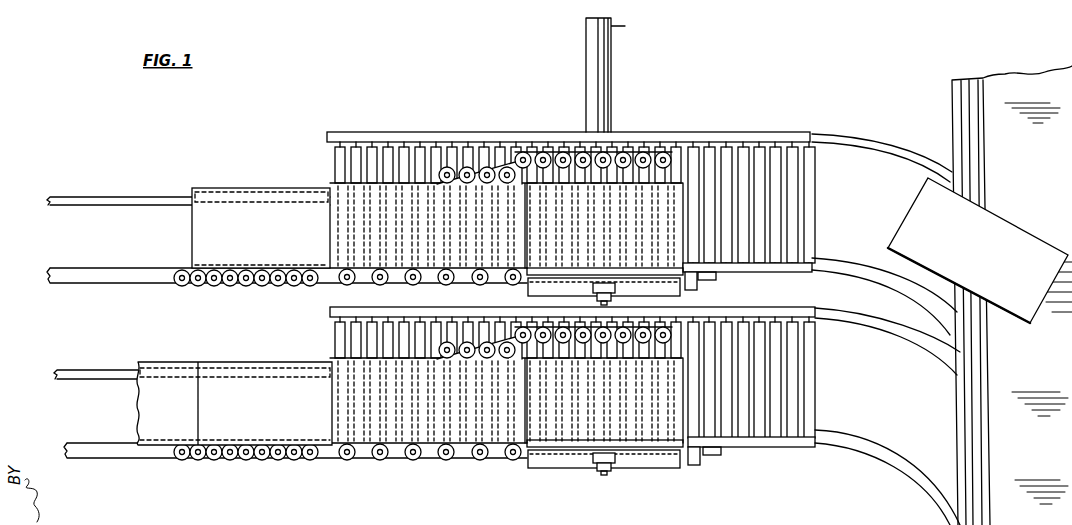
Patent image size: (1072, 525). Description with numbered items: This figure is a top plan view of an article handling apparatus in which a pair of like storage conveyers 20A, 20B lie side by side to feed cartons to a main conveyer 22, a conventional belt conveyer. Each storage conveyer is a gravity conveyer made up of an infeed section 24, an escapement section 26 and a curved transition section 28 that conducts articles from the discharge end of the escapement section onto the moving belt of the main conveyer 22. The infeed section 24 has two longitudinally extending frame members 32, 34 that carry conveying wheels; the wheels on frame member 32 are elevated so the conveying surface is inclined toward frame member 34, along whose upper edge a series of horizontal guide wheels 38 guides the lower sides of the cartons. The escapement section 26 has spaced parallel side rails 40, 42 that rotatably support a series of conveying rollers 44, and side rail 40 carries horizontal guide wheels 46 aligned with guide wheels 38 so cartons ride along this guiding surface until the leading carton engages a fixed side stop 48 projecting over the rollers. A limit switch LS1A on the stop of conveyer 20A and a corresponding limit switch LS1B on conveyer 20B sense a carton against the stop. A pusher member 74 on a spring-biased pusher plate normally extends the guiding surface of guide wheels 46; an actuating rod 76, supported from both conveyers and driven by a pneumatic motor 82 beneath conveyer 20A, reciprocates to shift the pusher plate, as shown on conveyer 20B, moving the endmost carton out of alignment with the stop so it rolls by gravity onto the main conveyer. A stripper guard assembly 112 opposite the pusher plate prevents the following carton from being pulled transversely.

The storage conveyer 20A is at (740, 126).
The storage conveyer 20B is at (745, 452).
The main conveyer 22 is at (992, 84).
The infeed section 24 is at (287, 318).
The escapement section 26 is at (494, 130).
The curved transition section 28 is at (878, 162).
The longitudinal frame member 32 is at (63, 196).
The longitudinal frame member 34 is at (96, 268).
The horizontal guide wheels 38 is at (298, 290).
The side rail 40 is at (786, 270).
The side rail 42 is at (343, 134).
The conveying rollers 44 is at (412, 160).
The horizontal guide wheels 46 is at (420, 284).
The fixed side stop 48 is at (704, 268).
The pusher member 74 is at (556, 268).
The actuating rod 76 is at (598, 471).
The pneumatic motor 82 is at (606, 59).
The stripper guard assembly 112 is at (518, 158).
The limit switch LS1A is at (692, 290).
The limit switch LS1B is at (690, 462).